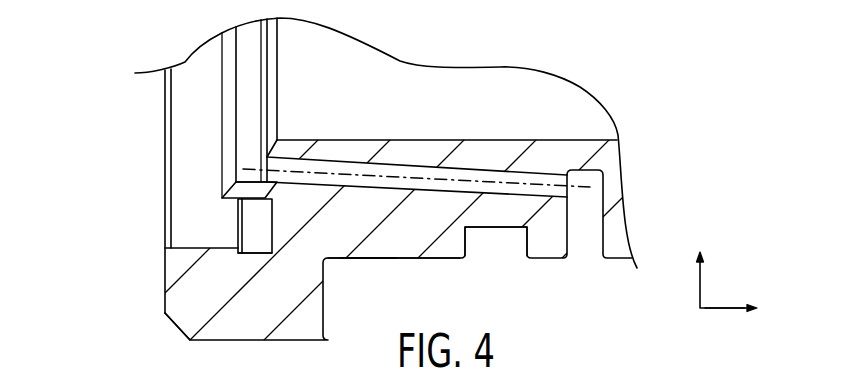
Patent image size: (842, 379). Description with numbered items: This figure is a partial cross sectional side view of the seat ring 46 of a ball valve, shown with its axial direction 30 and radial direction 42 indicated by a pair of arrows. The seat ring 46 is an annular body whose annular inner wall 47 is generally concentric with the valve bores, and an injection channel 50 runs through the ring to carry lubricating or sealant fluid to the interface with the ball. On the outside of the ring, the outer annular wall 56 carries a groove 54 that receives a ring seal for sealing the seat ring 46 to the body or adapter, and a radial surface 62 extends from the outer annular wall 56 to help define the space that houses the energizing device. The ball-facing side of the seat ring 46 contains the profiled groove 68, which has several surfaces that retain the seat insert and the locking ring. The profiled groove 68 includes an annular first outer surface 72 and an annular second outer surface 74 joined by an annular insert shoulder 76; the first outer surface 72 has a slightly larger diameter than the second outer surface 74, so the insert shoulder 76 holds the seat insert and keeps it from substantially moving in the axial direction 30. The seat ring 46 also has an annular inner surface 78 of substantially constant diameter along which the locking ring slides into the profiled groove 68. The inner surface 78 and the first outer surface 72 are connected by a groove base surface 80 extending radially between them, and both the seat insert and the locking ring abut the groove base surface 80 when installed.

The seat ring 46 is at (103, 112).
The annular inner wall 47 is at (348, 138).
The injection channel 50 is at (475, 172).
The inner surface 78 is at (240, 201).
The groove base surface 80 is at (272, 218).
The second outer surface 74 is at (183, 250).
The first outer surface 72 is at (252, 229).
The insert shoulder 76 is at (239, 252).
The profiled groove 68 is at (247, 253).
The radial surface 62 is at (323, 302).
The outer annular wall 56 is at (398, 258).
The groove 54 is at (495, 234).
The radial direction 42 is at (698, 288).
The axial direction 30 is at (723, 310).